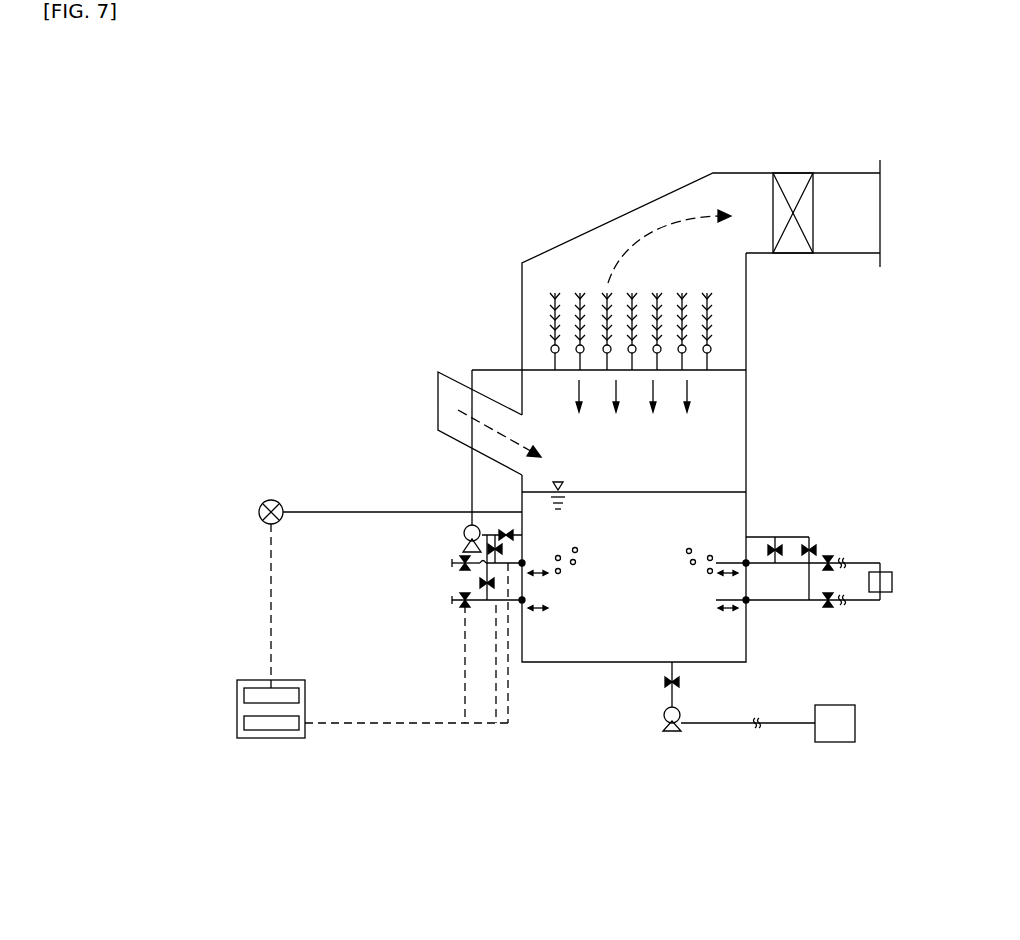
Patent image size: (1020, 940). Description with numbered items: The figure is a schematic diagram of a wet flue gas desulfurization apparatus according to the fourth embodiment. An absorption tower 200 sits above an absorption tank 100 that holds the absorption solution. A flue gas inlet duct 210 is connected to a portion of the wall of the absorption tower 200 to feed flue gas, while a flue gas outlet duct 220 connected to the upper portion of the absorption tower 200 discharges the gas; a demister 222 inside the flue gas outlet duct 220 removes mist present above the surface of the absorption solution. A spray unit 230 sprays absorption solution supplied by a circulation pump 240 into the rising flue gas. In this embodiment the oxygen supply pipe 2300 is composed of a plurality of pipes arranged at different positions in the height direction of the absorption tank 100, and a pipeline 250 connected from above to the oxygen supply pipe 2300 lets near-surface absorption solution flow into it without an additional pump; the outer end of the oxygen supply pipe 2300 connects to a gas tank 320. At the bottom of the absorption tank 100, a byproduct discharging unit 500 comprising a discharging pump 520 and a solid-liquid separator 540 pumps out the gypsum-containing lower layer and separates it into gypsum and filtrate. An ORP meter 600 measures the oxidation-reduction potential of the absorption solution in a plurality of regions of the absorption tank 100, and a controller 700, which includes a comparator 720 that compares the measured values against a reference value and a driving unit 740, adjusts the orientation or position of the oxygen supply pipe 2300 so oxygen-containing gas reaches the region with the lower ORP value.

The absorption tank 100 is at (629, 621).
The absorption tower 200 is at (676, 316).
The flue gas inlet duct 210 is at (453, 432).
The flue gas outlet duct 220 is at (742, 180).
The demister 222 is at (810, 205).
The spray unit 230 is at (712, 349).
The circulation pump 240 is at (463, 532).
The pipeline 250 is at (478, 553).
The gas tank 320 is at (893, 582).
The byproduct discharging unit 500 is at (760, 770).
The discharging pump 520 is at (672, 735).
The solid-liquid separator 540 is at (836, 765).
The ORP meter 600 is at (262, 501).
The controller 700 is at (318, 720).
The comparator 720 is at (244, 692).
The driving unit 740 is at (178, 697).
The oxygen supply pipe 2300 is at (538, 553).